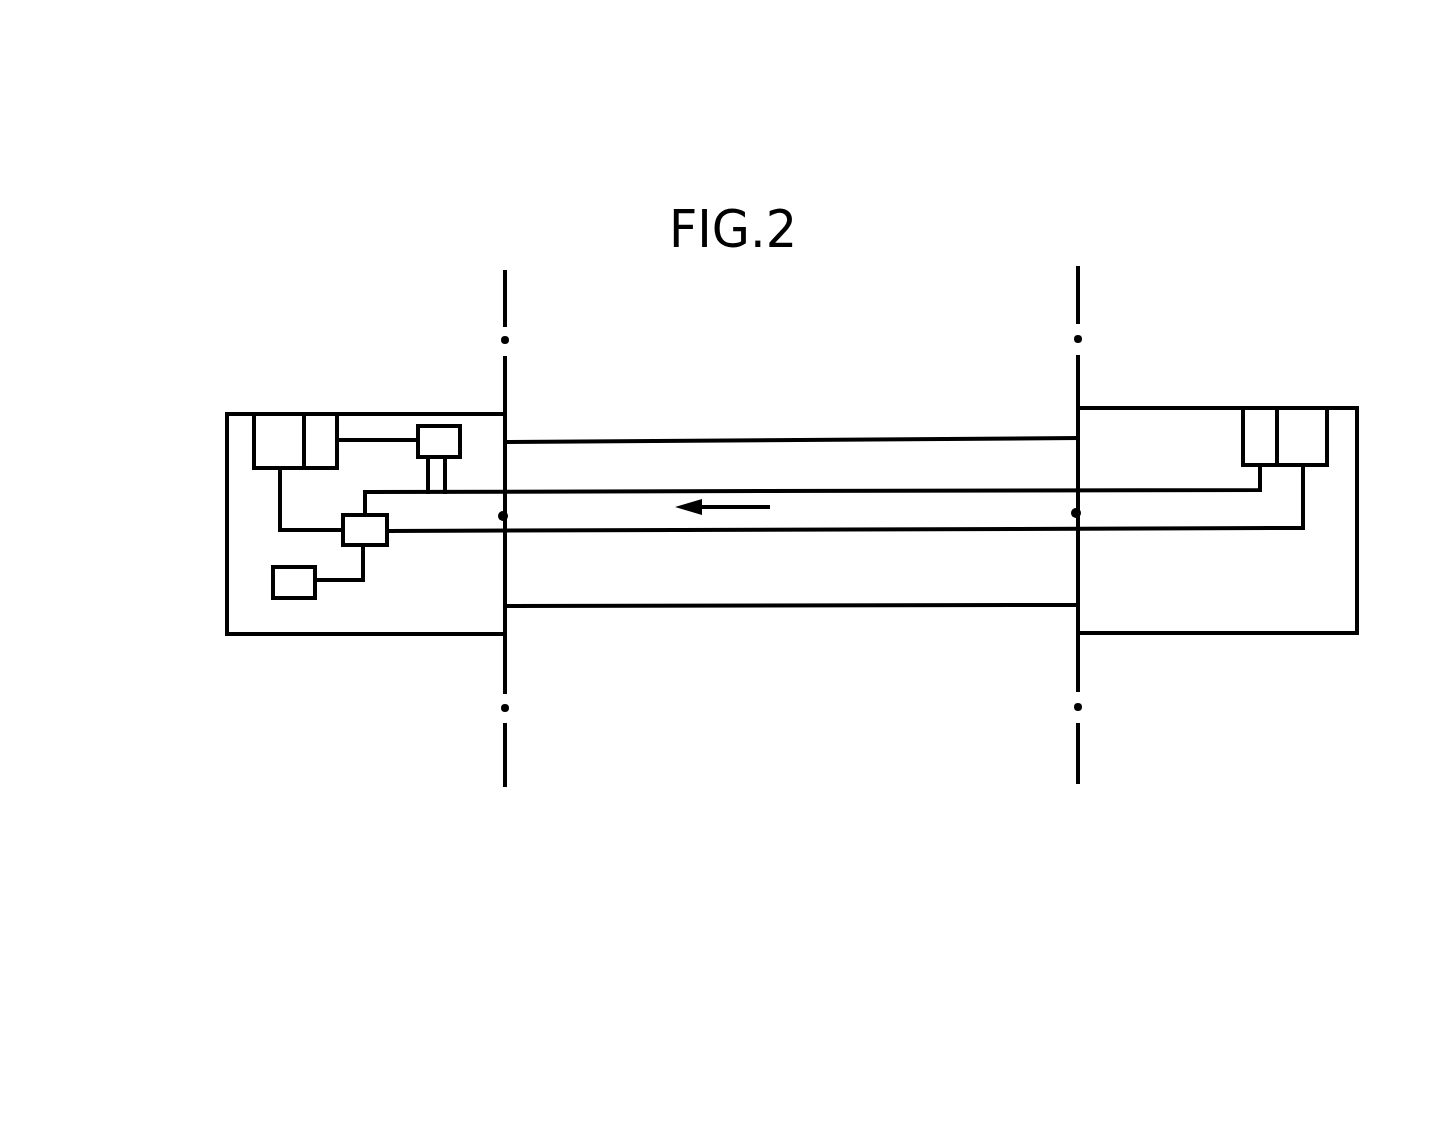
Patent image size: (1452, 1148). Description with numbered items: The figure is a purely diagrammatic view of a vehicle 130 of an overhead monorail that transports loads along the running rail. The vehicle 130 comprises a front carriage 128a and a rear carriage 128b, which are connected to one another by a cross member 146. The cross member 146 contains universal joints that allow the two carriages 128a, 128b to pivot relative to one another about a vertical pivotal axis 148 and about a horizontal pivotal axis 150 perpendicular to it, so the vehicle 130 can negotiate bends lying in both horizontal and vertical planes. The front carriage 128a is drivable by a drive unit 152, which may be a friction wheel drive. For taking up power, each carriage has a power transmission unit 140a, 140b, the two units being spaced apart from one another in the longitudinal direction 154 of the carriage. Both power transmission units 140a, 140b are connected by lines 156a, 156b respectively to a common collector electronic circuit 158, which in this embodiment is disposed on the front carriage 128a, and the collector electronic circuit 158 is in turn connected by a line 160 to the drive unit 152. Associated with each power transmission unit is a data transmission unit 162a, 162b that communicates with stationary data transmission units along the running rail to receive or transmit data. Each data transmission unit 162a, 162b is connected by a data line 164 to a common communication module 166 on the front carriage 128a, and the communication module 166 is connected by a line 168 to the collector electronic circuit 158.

The front carriage 128a is at (430, 625).
The rear carriage 128b is at (1327, 500).
The vehicle 130 is at (1186, 358).
The power transmission unit 140a is at (285, 443).
The power transmission unit 140b is at (1300, 430).
The cross member 146 is at (812, 585).
The vertical pivotal axis 148 is at (505, 515).
The horizontal pivotal axis 150 is at (505, 317).
The drive unit 152 is at (273, 578).
The longitudinal direction 154 is at (742, 503).
The line 156a is at (273, 497).
The line 156b is at (1247, 528).
The collector electronic circuit 158 is at (367, 532).
The line 160 is at (348, 583).
The data transmission unit 162a is at (318, 443).
The data transmission unit 162b is at (1262, 430).
The data line 164 is at (382, 440).
The communication module 166 is at (443, 443).
The line 168 is at (437, 530).